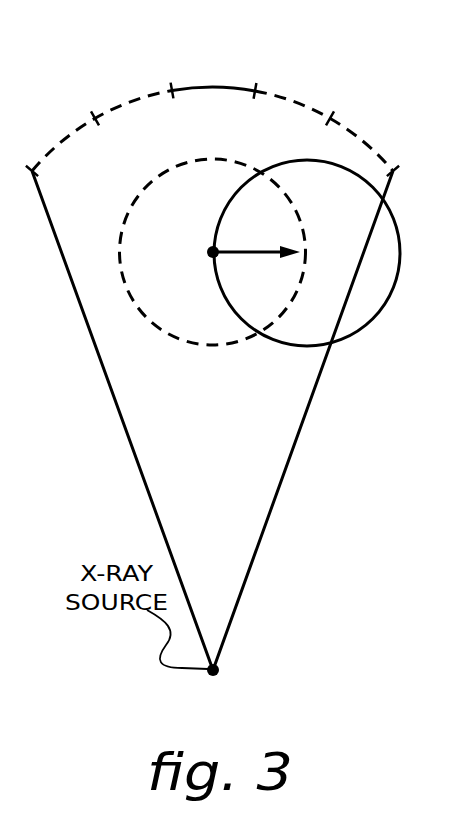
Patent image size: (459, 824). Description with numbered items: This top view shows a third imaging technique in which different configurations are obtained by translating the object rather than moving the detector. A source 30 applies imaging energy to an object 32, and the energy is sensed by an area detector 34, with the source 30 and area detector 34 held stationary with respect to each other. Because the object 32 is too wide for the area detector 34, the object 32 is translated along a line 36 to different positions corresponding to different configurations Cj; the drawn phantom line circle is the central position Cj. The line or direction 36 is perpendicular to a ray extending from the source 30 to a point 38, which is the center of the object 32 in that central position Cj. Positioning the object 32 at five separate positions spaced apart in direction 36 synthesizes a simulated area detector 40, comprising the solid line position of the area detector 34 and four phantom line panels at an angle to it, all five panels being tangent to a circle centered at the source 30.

The source 30 is at (218, 671).
The object 32 is at (380, 311).
The area detector 34 is at (213, 90).
The line 36 is at (252, 250).
The point 38 is at (208, 250).
The simulated area detector 40 is at (310, 108).
The configuration Cj is at (218, 347).